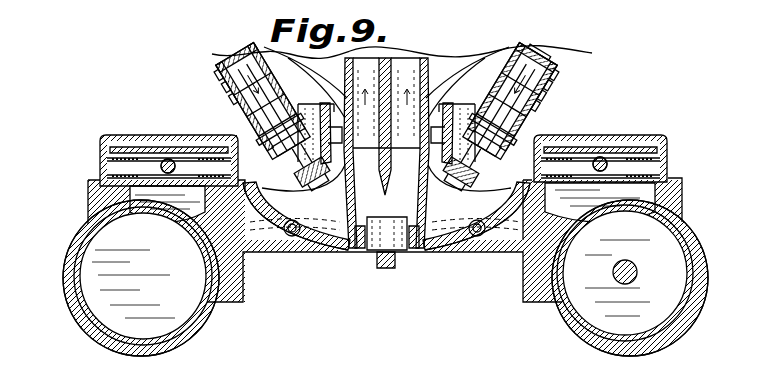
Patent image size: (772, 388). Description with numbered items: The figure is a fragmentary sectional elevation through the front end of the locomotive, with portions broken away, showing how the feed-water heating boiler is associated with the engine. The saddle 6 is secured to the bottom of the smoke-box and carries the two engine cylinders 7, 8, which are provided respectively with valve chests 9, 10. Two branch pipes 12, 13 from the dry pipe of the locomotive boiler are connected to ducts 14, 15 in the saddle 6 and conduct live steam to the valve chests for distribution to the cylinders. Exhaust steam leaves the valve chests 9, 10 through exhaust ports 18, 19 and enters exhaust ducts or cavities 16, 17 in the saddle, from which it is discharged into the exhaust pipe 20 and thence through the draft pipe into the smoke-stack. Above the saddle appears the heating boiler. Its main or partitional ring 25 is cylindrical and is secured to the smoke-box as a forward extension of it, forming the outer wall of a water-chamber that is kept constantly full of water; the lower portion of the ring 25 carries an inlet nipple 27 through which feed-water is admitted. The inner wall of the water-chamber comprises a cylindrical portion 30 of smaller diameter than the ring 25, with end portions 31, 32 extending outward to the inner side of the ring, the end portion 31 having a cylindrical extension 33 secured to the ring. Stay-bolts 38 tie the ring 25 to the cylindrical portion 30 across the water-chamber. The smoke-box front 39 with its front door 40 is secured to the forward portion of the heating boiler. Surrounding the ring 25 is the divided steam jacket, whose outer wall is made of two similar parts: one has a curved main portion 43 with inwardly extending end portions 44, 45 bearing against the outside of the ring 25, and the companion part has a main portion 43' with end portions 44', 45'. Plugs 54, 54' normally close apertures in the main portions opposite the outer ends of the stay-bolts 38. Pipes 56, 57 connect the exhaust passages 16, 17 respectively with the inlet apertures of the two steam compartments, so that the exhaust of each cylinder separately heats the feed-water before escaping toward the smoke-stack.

The saddle 6 is at (338, 254).
The engine cylinder 7 is at (580, 328).
The engine cylinder 8 is at (70, 264).
The valve chest 9 is at (667, 164).
The valve chest 10 is at (100, 168).
The branch pipe 12 is at (462, 104).
The branch pipe 13 is at (308, 106).
The duct 14 is at (470, 196).
The duct 15 is at (300, 193).
The exhaust duct 16 is at (440, 254).
The exhaust duct 17 is at (262, 240).
The exhaust port 18 is at (575, 184).
The exhaust port 19 is at (135, 184).
The exhaust pipe 20 is at (428, 72).
The main or partitional ring 25 is at (240, 66).
The inlet nipple 27 is at (387, 270).
The cylindrical portion 30 is at (498, 62).
The end portion 31 is at (470, 108).
The end portion 32 is at (538, 98).
The cylindrical extension 33 is at (302, 100).
The stay-bolts 38 is at (524, 64).
The smoke-box front 39 is at (248, 126).
The front door 40 is at (402, 60).
The main portion 43 is at (575, 74).
The main portion 43' is at (198, 78).
The end portion 44 is at (546, 127).
The end portion 44' is at (249, 121).
The end portion 45 is at (566, 66).
The end portion 45' is at (191, 58).
The plug 54 is at (587, 86).
The plug 54' is at (202, 93).
The pipe 56 is at (479, 238).
The pipe 57 is at (292, 238).